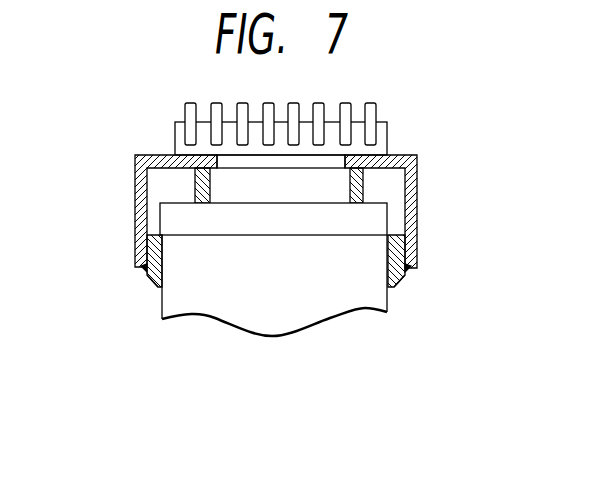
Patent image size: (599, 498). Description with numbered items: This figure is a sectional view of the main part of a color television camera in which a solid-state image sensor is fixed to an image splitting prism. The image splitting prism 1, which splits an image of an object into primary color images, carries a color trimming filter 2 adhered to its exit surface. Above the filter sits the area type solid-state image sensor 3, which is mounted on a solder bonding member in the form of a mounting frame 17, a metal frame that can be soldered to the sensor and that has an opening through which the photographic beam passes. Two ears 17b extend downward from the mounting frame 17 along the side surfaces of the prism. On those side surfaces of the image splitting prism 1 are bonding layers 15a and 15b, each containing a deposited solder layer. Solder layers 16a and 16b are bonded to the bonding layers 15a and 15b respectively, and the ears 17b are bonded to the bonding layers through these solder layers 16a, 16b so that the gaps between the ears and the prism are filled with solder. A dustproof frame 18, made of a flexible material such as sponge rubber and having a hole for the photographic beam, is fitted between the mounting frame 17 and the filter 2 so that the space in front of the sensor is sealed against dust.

The image splitting prism 1 is at (263, 323).
The color trimming filter 2 is at (178, 222).
The solid-state image sensor 3 is at (360, 138).
The bonding layer 15a is at (157, 287).
The bonding layer 15b is at (393, 285).
The solder layer 16a is at (145, 270).
The solder layer 16b is at (405, 272).
The mounting frame 17 is at (405, 163).
The ears 17b is at (140, 246).
The dustproof frame 18 is at (362, 187).